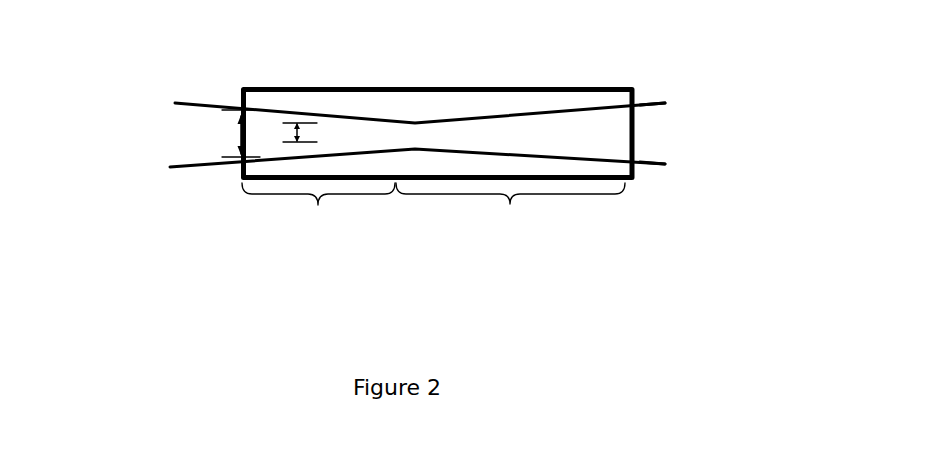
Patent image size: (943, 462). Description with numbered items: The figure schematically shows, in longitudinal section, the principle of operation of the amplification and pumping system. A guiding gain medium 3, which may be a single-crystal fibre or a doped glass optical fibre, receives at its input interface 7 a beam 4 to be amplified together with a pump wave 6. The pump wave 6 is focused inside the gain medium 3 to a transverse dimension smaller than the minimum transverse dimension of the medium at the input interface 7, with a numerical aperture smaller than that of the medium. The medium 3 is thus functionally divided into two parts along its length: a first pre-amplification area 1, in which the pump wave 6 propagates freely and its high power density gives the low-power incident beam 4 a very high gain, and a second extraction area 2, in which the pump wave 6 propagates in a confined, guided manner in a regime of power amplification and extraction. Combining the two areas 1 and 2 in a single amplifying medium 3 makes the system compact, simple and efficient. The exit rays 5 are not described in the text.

The pre-amplification area 1 is at (318, 218).
The extraction area 2 is at (510, 218).
The guiding gain medium 3 is at (367, 88).
The beam to be amplified 4 is at (172, 167).
The output light rays 5 is at (662, 162).
The pump wave 6 is at (198, 142).
The input interface 7 is at (242, 163).